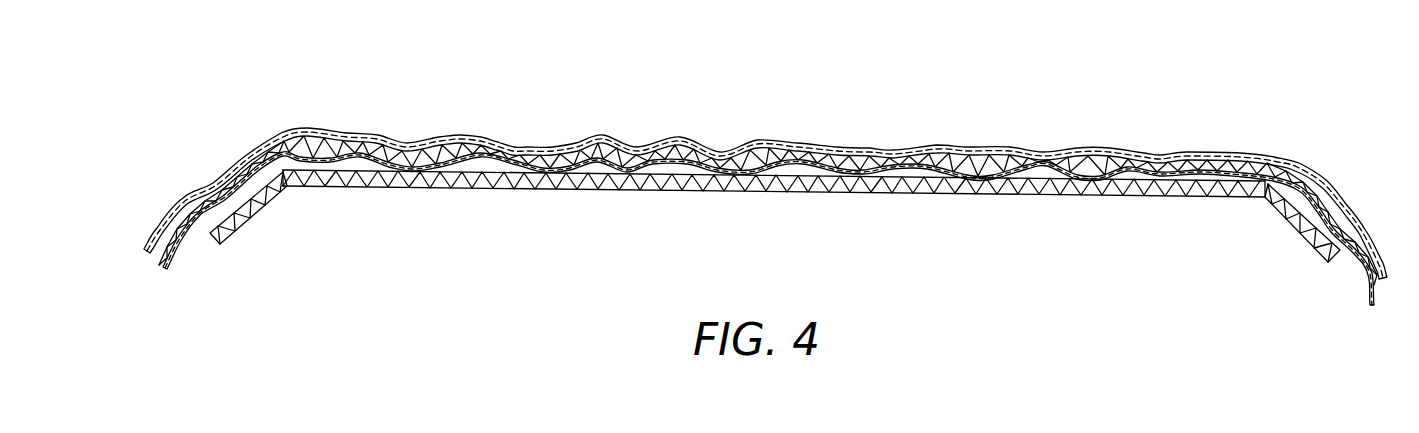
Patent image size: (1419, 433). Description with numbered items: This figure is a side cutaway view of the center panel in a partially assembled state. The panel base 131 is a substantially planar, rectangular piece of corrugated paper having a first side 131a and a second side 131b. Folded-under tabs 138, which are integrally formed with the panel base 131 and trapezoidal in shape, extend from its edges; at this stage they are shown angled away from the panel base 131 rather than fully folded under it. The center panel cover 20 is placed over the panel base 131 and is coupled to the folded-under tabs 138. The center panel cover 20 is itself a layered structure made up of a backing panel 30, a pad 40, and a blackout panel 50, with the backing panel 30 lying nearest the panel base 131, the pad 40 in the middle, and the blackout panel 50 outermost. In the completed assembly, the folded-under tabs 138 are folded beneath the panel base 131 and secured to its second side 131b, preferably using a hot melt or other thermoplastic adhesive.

The center panel cover 20 is at (644, 104).
The blackout panel 50 is at (480, 138).
The pad 40 is at (520, 147).
The backing panel 30 is at (565, 183).
The panel base 131 is at (774, 169).
The first side 131a is at (817, 141).
The second side 131b is at (833, 196).
The folded-under tabs 138 is at (245, 217).